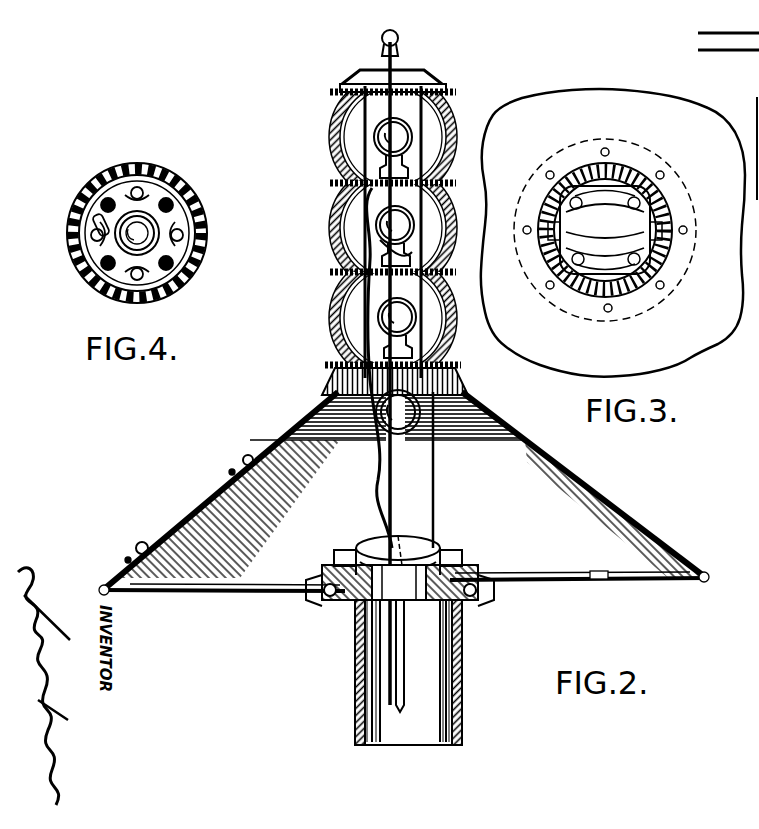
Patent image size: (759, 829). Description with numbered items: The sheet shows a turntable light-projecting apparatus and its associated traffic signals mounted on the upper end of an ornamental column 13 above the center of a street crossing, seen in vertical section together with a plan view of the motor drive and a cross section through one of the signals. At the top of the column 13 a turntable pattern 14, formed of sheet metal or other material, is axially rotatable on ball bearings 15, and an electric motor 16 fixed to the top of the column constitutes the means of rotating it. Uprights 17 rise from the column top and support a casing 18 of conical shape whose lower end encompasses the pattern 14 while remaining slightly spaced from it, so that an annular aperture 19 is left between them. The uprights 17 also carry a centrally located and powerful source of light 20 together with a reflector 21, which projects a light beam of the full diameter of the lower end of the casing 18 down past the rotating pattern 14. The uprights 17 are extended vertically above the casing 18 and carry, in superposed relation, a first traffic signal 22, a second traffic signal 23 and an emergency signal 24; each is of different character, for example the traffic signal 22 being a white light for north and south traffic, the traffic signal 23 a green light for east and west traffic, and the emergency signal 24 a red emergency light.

In FIG. 2, the ornamental column 13 is at (462, 688).
In FIG. 2, the turntable pattern 14 is at (498, 575).
In FIG. 3, the turntable pattern 14 is at (688, 345).
In FIG. 2, the ball bearings 15 is at (478, 600).
In FIG. 2, the electric motor 16 is at (440, 540).
In FIG. 3, the electric motor 16 is at (605, 230).
In FIG. 2, the uprights 17 is at (436, 492).
In FIG. 3, the uprights 17 is at (573, 290).
In FIG. 4, the uprights 17 is at (90, 256).
In FIG. 2, the casing 18 is at (562, 462).
In FIG. 2, the annular aperture 19 is at (684, 584).
In FIG. 2, the source of light 20 is at (470, 390).
In FIG. 2, the reflector 21 is at (505, 413).
In FIG. 2, the traffic signal 22 is at (328, 328).
In FIG. 2, the traffic signal 23 is at (326, 235).
In FIG. 4, the traffic signal 23 is at (200, 208).
In FIG. 2, the emergency signal 24 is at (327, 139).